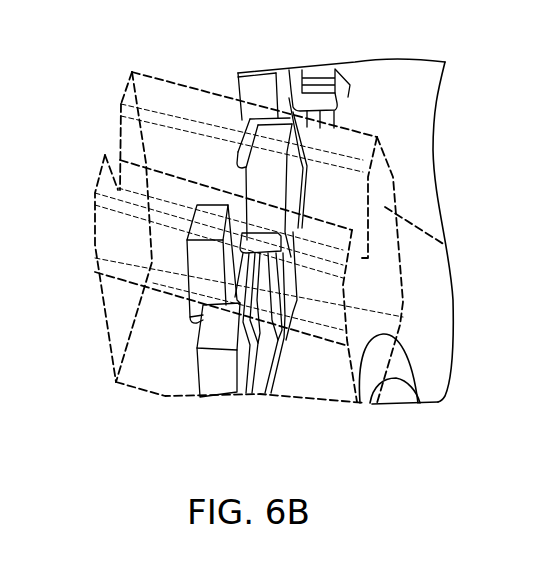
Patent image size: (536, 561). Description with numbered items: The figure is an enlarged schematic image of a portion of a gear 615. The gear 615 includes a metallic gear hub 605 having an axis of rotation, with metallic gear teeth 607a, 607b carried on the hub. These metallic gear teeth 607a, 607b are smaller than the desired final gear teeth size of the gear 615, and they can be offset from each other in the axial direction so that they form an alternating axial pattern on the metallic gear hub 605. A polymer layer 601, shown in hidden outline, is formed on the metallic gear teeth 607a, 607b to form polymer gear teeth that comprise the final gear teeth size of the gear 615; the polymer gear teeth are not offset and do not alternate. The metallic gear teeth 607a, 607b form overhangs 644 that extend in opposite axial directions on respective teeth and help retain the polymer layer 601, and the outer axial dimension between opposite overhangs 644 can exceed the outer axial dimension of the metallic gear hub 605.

The polymer layer 601 is at (446, 245).
The metallic gear hub 605 is at (396, 121).
The metallic gear tooth 607a is at (200, 220).
The metallic gear tooth 607b is at (305, 148).
The overhang 644 is at (302, 125).
The gear 615 is at (163, 417).